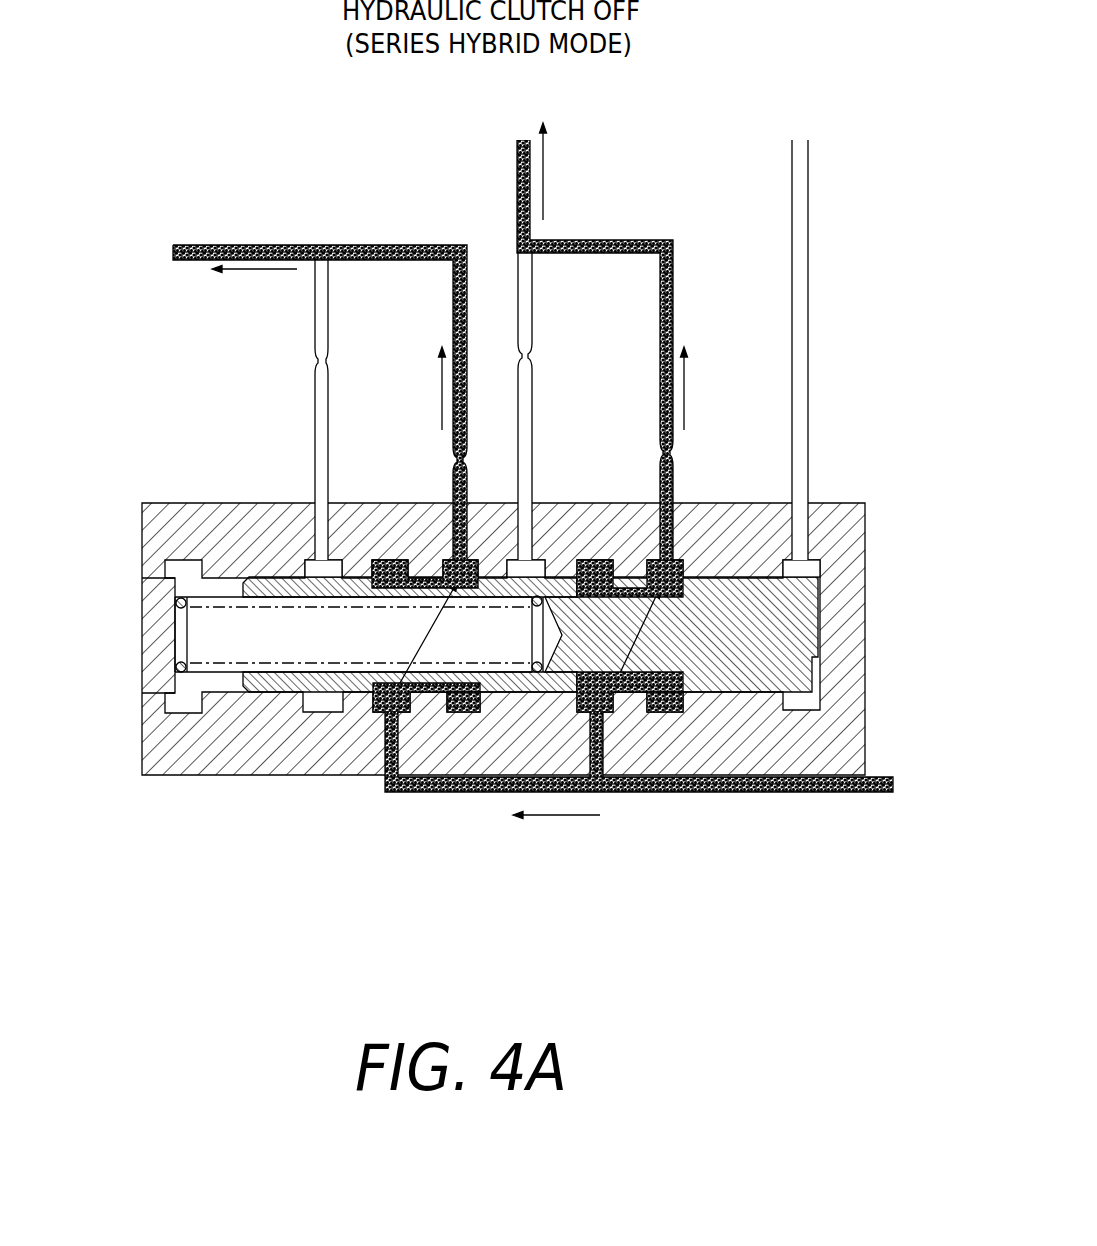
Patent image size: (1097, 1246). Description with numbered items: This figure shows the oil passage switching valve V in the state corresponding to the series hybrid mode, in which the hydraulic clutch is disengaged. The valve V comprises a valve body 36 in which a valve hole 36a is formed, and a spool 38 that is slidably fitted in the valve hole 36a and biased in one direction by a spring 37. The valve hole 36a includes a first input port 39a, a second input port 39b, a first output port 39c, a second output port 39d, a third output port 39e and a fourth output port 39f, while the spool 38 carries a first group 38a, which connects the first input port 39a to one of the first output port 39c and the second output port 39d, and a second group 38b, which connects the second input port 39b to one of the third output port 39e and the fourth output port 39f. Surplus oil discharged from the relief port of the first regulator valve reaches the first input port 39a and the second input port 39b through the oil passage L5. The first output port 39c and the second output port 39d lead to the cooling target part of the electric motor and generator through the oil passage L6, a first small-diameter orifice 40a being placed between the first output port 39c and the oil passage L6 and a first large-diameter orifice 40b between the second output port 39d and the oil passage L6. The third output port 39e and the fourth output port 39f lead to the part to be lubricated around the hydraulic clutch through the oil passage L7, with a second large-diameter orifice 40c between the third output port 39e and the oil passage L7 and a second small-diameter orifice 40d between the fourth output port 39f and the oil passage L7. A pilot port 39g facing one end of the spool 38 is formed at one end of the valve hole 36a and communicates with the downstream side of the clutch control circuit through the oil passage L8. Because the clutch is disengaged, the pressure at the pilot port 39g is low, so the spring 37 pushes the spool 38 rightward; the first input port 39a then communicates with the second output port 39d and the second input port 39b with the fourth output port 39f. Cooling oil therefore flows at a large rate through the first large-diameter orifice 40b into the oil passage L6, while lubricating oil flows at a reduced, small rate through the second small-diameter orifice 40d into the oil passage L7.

The valve body 36 is at (258, 771).
The valve hole 36a is at (294, 690).
The spring 37 is at (180, 678).
The spool 38 is at (763, 649).
The first group 38a is at (463, 697).
The second group 38b is at (665, 697).
The first input port 39a is at (398, 690).
The second input port 39b is at (610, 705).
The first output port 39c is at (318, 566).
The second output port 39d is at (450, 565).
The third output port 39e is at (540, 565).
The fourth output port 39f is at (675, 568).
The pilot port 39g is at (808, 565).
The first small-diameter orifice 40a is at (327, 361).
The first large-diameter orifice 40b is at (456, 459).
The second large-diameter orifice 40c is at (529, 352).
The second small-diameter orifice 40d is at (674, 453).
The oil passage L5 is at (787, 793).
The oil passage L6 is at (227, 247).
The oil passage L7 is at (517, 205).
The oil passage L8 is at (796, 262).
The oil passage switching valve V is at (207, 495).